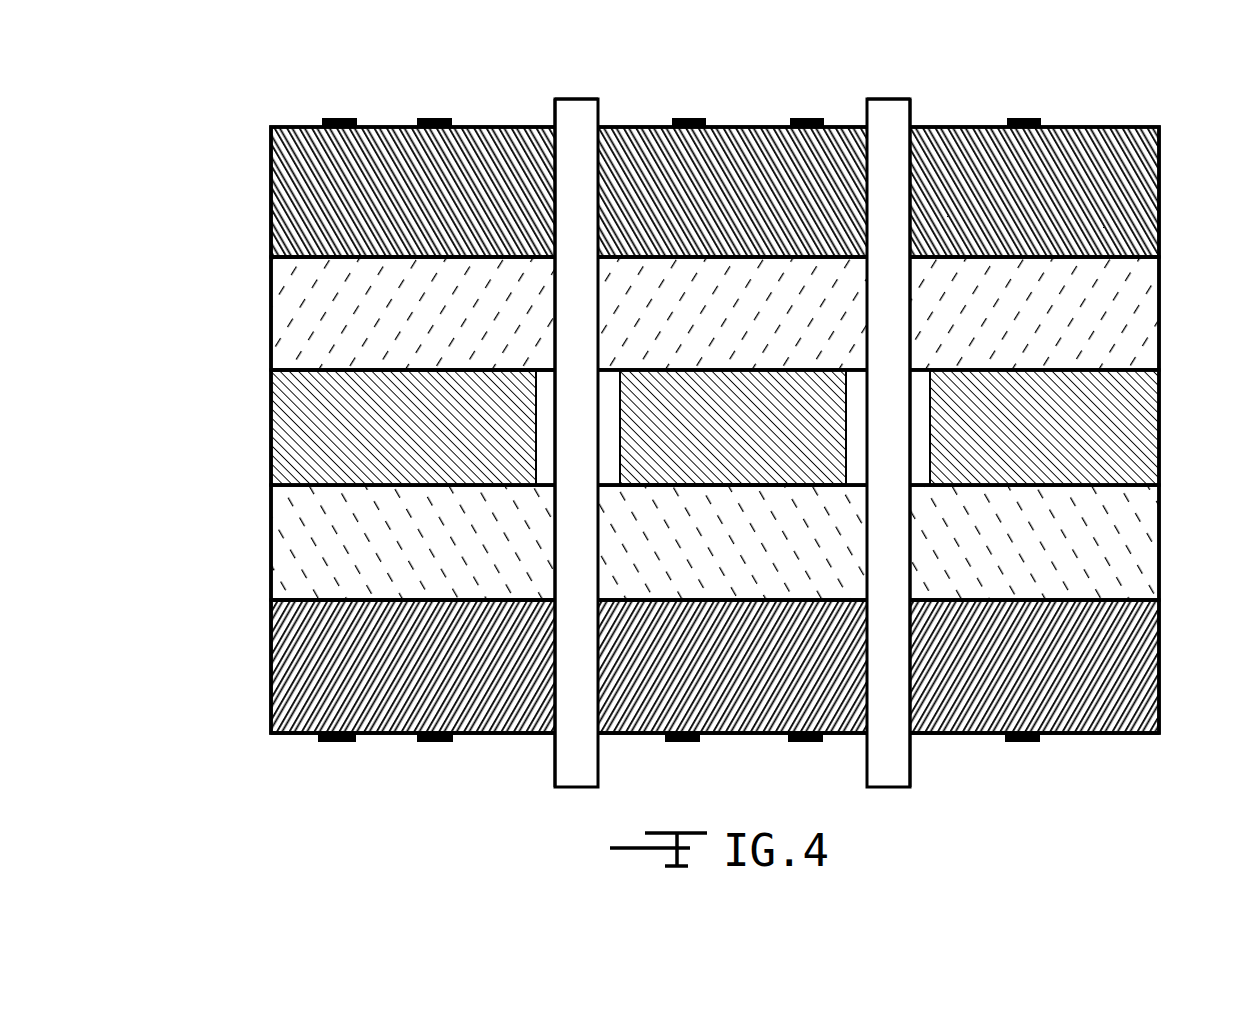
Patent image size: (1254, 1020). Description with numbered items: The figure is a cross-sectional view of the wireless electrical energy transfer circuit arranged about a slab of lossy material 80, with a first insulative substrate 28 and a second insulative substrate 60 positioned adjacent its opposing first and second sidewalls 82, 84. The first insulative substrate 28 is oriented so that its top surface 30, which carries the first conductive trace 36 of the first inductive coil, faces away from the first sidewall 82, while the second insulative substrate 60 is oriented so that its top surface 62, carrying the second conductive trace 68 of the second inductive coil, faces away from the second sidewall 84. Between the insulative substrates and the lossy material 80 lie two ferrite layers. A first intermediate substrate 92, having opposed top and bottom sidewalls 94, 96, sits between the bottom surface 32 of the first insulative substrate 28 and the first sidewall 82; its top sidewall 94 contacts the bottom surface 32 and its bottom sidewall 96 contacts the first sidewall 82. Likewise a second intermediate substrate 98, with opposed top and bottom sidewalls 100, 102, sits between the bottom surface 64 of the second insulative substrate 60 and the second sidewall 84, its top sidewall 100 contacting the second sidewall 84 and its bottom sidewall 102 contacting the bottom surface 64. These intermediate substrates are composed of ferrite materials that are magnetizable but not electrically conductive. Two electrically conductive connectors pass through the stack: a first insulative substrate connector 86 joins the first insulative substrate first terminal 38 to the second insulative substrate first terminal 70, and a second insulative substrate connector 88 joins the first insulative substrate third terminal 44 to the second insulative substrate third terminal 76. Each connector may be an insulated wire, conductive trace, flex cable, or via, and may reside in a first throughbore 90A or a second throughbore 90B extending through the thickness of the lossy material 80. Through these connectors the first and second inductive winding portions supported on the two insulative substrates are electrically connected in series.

The first insulative substrate 28 is at (1140, 185).
The top surface of the first insulative substrate 30 is at (1128, 126).
The bottom surface of the first insulative substrate 32 is at (1160, 257).
The first conductive trace 36 is at (340, 121).
The first insulative substrate first terminal 38 is at (912, 124).
The first insulative substrate third terminal 44 is at (599, 127).
The second insulative substrate 60 is at (1135, 667).
The top surface of the second insulative substrate 62 is at (1093, 734).
The bottom surface of the second insulative substrate 64 is at (1160, 600).
The second conductive trace 68 is at (340, 743).
The second insulative substrate first terminal 70 is at (912, 735).
The second insulative substrate third terminal 76 is at (600, 735).
The lossy material 80 is at (1003, 435).
The first sidewall of the lossy material 82 is at (1110, 362).
The second sidewall of the lossy material 84 is at (1160, 486).
The first insulative substrate connector 86 is at (889, 124).
The second insulative substrate connector 88 is at (580, 162).
The first throughbore 90A is at (920, 396).
The second throughbore 90B is at (545, 453).
The first intermediate substrate 92 is at (1140, 313).
The top sidewall of the first intermediate substrate 94 is at (271, 257).
The bottom sidewall of the first intermediate substrate 96 is at (368, 370).
The second intermediate substrate 98 is at (1122, 553).
The top sidewall of the second intermediate substrate 100 is at (727, 487).
The bottom sidewall of the second intermediate substrate 102 is at (271, 600).